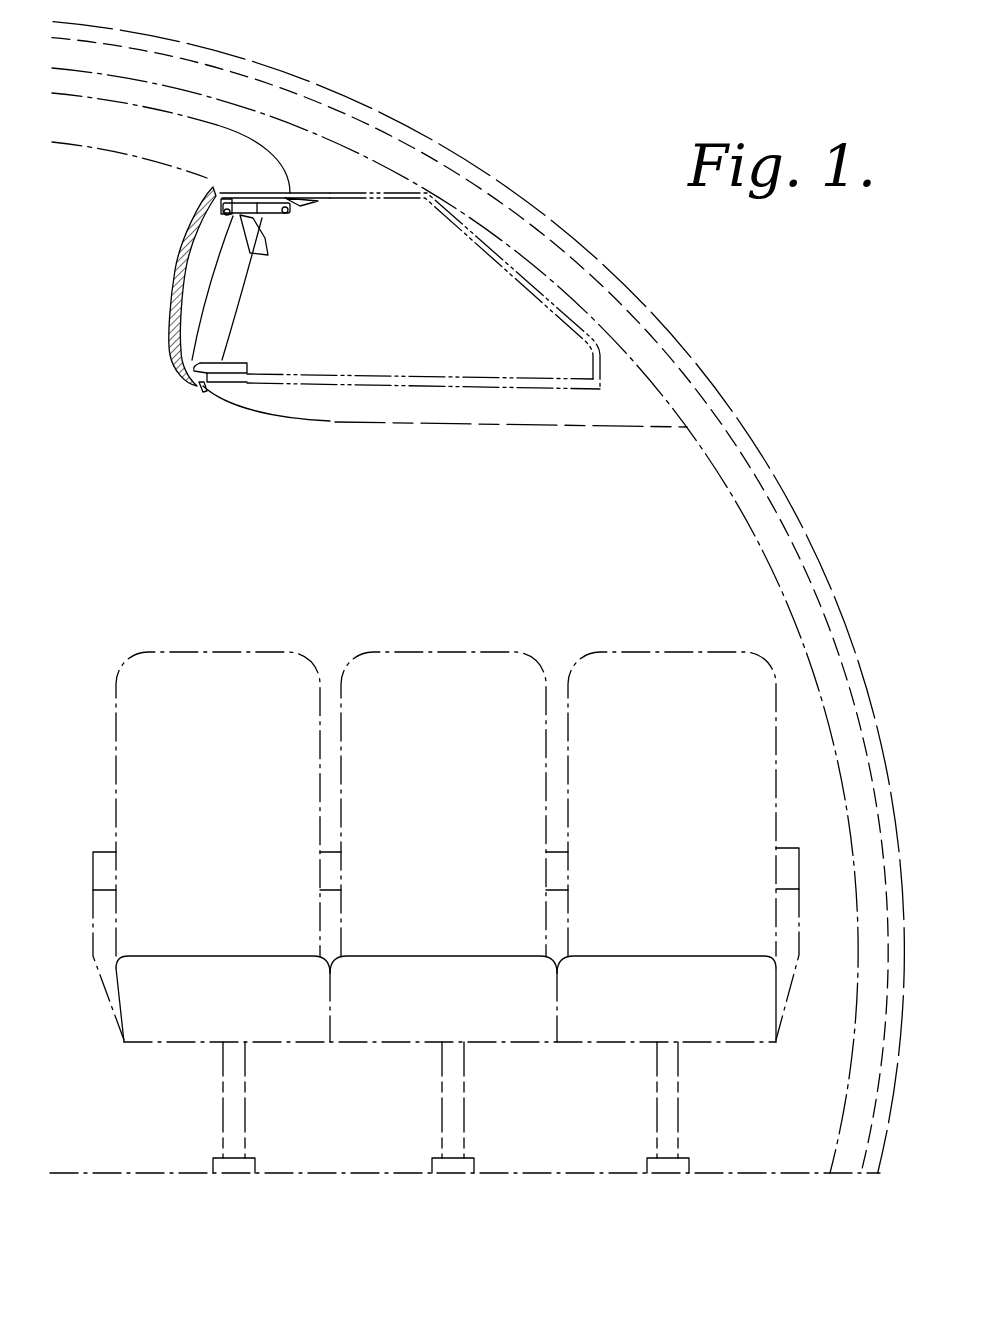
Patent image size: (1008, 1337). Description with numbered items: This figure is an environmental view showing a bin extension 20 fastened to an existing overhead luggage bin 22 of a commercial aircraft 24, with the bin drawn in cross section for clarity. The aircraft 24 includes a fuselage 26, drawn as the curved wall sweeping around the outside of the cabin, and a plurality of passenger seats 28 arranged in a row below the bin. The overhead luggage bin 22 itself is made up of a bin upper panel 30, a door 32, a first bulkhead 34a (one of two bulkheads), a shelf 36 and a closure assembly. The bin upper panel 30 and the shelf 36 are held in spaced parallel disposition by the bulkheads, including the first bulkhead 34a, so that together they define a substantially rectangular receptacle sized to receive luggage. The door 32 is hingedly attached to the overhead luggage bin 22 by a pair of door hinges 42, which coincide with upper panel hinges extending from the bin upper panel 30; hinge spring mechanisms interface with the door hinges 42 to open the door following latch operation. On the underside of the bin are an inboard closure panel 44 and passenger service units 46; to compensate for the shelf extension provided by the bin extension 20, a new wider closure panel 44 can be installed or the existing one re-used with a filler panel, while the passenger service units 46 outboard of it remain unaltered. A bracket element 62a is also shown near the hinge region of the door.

The bin extension 20 is at (215, 292).
The overhead luggage bin 22 is at (291, 428).
The commercial aircraft 24 is at (579, 252).
The fuselage 26 is at (833, 598).
The passenger seats 28 is at (620, 645).
The bin upper panel 30 is at (357, 193).
The door 32 is at (172, 298).
The first bulkhead 34a is at (392, 322).
The shelf 36 is at (482, 389).
The door hinges 42 is at (213, 192).
The inboard closure panel 44 is at (215, 393).
The passenger service units 46 is at (573, 428).
The support bracket 62a is at (266, 242).